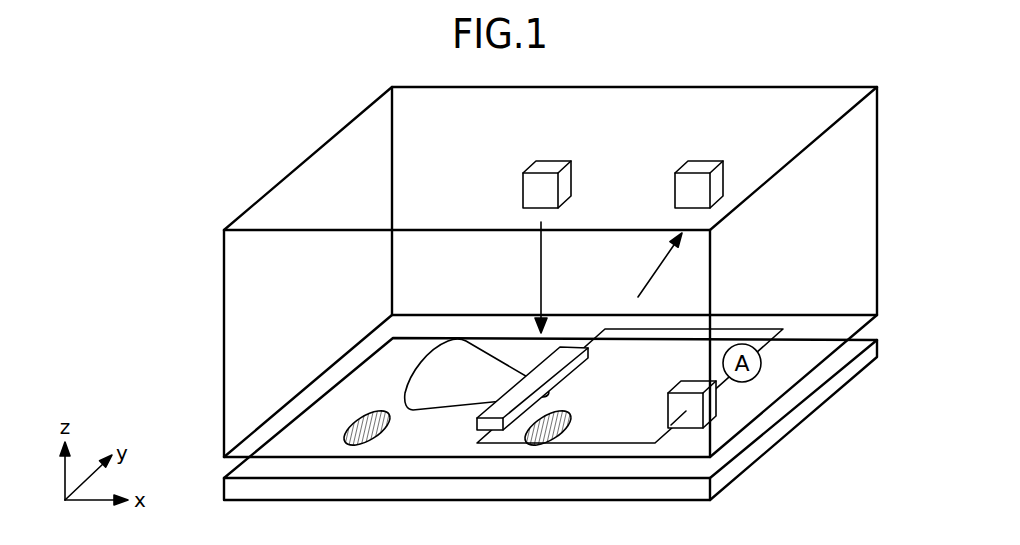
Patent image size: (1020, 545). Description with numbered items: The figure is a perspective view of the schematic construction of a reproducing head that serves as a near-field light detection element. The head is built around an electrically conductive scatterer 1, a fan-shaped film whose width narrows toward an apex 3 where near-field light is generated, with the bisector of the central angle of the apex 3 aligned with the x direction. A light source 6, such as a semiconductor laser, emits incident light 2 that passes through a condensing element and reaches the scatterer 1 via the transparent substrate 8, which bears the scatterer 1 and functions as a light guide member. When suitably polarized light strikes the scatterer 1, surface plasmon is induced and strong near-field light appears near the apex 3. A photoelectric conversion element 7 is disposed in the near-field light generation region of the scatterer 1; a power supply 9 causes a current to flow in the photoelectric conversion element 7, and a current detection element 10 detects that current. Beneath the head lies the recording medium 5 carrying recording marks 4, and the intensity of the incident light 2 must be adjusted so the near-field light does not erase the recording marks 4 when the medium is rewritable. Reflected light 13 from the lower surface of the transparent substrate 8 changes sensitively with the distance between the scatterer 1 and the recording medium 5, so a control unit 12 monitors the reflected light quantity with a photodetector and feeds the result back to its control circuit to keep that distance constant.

The scatterer 1 is at (417, 381).
The incident light 2 is at (538, 268).
The apex 3 is at (563, 401).
The recording marks 4 is at (393, 422).
The recording medium 5 is at (223, 482).
The light source 6 is at (523, 187).
The photoelectric conversion element 7 is at (590, 354).
The transparent substrate 8 is at (232, 280).
The power supply 9 is at (690, 384).
The current detection element 10 is at (762, 363).
The control unit 12 is at (675, 187).
The reflected light 13 is at (652, 268).